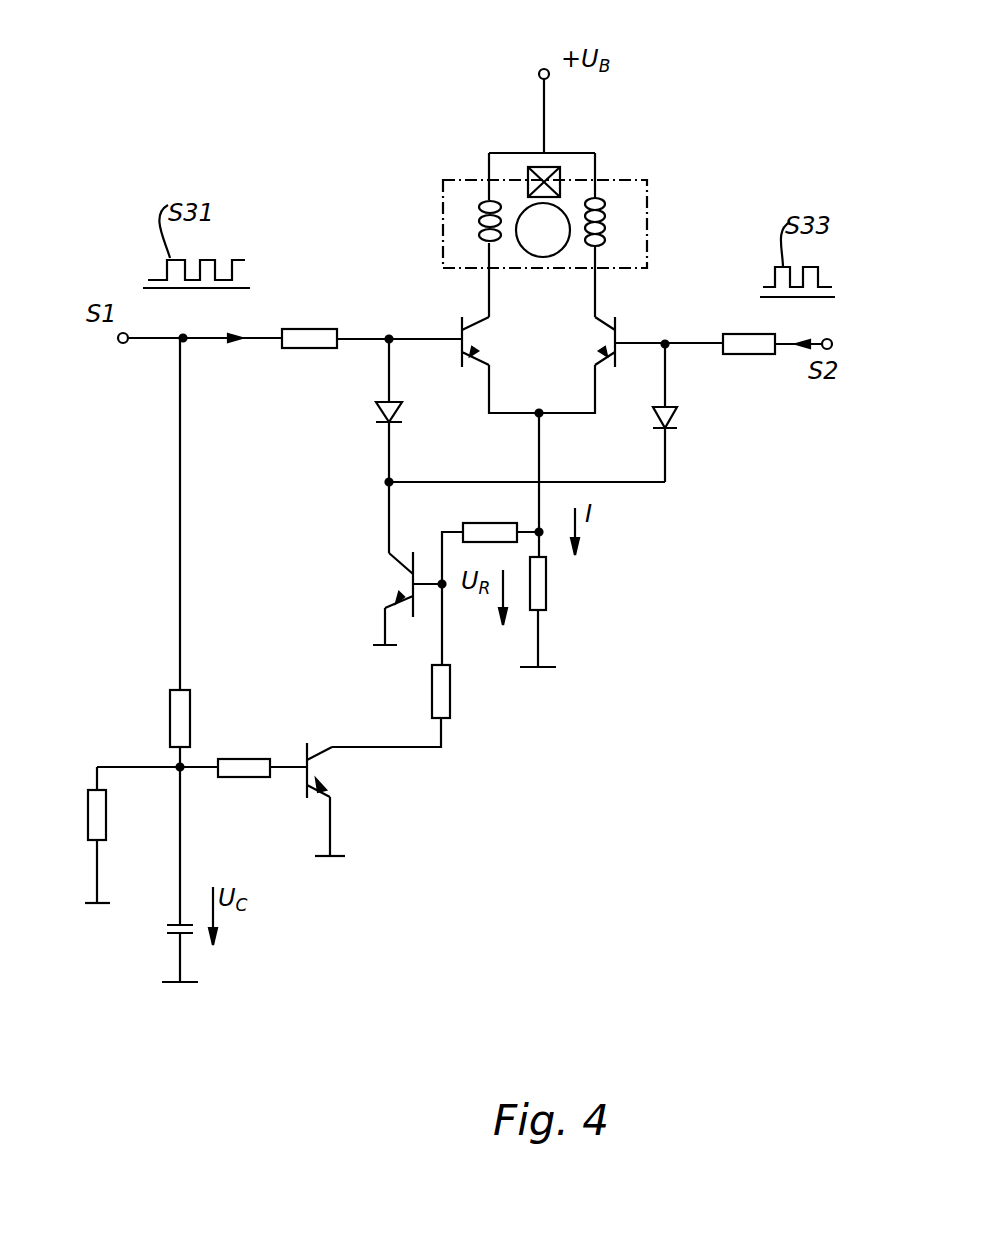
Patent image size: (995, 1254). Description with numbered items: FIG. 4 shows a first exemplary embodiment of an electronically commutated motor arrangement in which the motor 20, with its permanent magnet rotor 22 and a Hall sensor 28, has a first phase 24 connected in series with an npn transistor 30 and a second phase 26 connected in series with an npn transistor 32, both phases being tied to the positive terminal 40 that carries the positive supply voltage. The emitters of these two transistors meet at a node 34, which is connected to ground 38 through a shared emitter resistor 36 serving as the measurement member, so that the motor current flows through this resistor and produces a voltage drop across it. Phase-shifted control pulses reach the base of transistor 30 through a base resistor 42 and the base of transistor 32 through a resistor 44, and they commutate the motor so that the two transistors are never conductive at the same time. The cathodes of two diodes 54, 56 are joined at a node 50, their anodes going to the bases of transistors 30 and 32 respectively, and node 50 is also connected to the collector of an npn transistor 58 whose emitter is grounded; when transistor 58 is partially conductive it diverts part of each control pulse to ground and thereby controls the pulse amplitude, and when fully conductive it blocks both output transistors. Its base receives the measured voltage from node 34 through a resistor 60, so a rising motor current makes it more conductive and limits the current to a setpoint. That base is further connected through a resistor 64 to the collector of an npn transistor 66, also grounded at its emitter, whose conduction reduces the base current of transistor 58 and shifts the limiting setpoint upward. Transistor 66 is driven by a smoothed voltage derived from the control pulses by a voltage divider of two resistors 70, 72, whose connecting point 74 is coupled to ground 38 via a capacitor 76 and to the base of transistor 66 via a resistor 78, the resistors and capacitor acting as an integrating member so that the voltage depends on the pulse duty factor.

The motor 20 is at (648, 232).
The permanent magnet rotor 22 is at (528, 255).
The phase 24 is at (487, 199).
The phase 26 is at (603, 201).
The Hall sensor 28 is at (549, 167).
The npn transistor 30 is at (458, 325).
The npn transistor 32 is at (618, 325).
The node 34 is at (539, 412).
The shared emitter resistor 36 is at (546, 583).
The ground 38 is at (540, 667).
The positive terminal 40 is at (541, 70).
The base resistor 42 is at (310, 328).
The resistor 44 is at (748, 354).
The node 50 is at (388, 482).
The diode 54 is at (378, 412).
The diode 56 is at (668, 415).
The npn transistor 58 is at (393, 572).
The resistor 60 is at (490, 523).
The resistor 64 is at (450, 695).
The npn transistor 66 is at (305, 750).
The resistor 70 is at (170, 720).
The resistor 72 is at (88, 805).
The connecting point 74 is at (180, 770).
The capacitor 76 is at (165, 927).
The resistor 78 is at (245, 759).